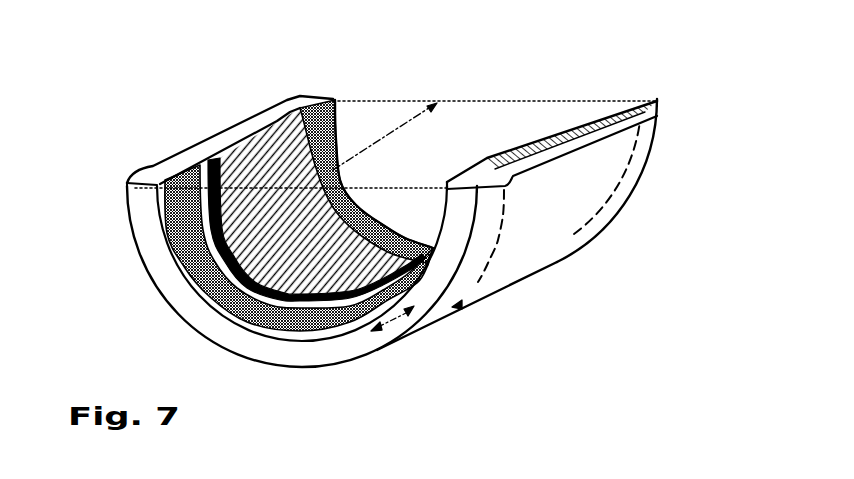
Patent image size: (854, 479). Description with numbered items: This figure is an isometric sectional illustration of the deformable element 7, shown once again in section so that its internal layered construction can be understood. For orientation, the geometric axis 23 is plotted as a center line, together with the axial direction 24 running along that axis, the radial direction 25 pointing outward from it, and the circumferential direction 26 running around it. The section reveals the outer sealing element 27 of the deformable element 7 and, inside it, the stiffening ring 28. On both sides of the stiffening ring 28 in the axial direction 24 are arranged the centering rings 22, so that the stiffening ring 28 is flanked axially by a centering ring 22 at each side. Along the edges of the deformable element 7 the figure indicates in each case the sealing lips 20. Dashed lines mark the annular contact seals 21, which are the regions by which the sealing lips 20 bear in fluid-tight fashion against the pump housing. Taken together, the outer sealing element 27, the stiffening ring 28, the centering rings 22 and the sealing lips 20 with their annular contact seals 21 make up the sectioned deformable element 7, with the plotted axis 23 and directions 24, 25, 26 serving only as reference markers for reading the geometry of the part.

The deformable element 7 is at (188, 108).
The sealing lips 20 is at (140, 170).
The annular contact seals 21 is at (639, 142).
The centering rings 22 is at (160, 216).
The geometric axis 23 is at (430, 120).
The axial direction 24 is at (388, 130).
The radial direction 25 is at (318, 288).
The circumferential direction 26 is at (395, 341).
The outer sealing element 27 is at (228, 143).
The stiffening ring 28 is at (256, 149).